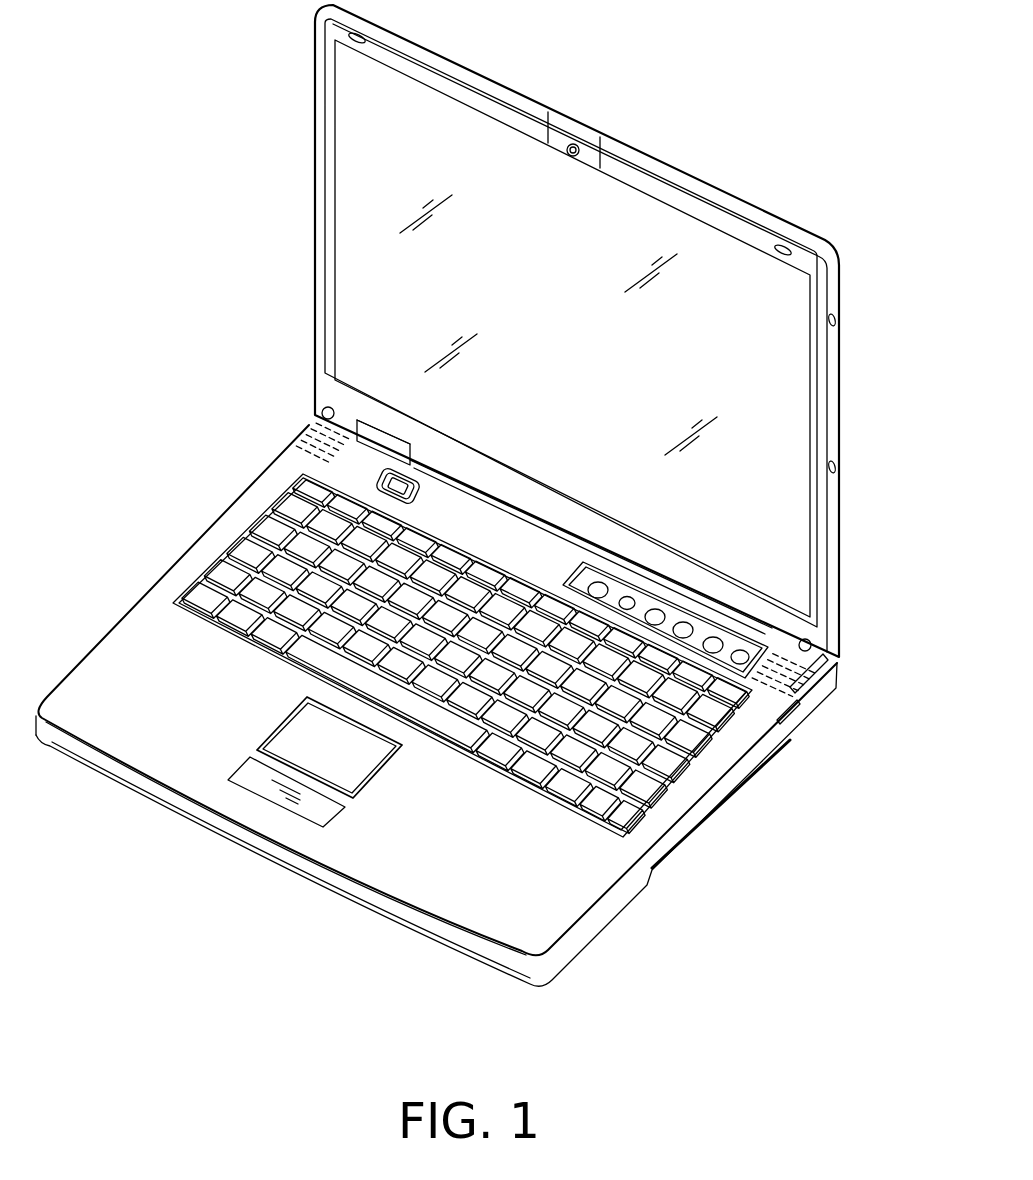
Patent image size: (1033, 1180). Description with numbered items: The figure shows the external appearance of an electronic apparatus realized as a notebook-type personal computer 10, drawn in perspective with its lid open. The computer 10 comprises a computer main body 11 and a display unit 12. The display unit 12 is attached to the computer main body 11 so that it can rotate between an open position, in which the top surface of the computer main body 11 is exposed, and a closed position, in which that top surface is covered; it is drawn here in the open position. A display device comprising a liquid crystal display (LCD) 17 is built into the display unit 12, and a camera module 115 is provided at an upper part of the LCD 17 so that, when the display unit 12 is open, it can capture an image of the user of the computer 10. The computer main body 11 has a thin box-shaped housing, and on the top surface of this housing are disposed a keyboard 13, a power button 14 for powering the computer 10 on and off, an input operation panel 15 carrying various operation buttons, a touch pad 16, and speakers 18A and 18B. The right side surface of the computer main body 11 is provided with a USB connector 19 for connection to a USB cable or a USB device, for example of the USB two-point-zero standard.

The notebook-type personal computer 10 is at (829, 849).
The computer main body 11 is at (578, 948).
The display unit 12 is at (835, 490).
The keyboard 13 is at (618, 773).
The power button 14 is at (385, 478).
The input operation panel 15 is at (675, 618).
The touch pad 16 is at (295, 747).
The liquid crystal display (LCD) 17 is at (782, 358).
The speaker 18A is at (312, 418).
The speaker 18B is at (800, 672).
The USB connector 19 is at (805, 698).
The camera module 115 is at (598, 157).